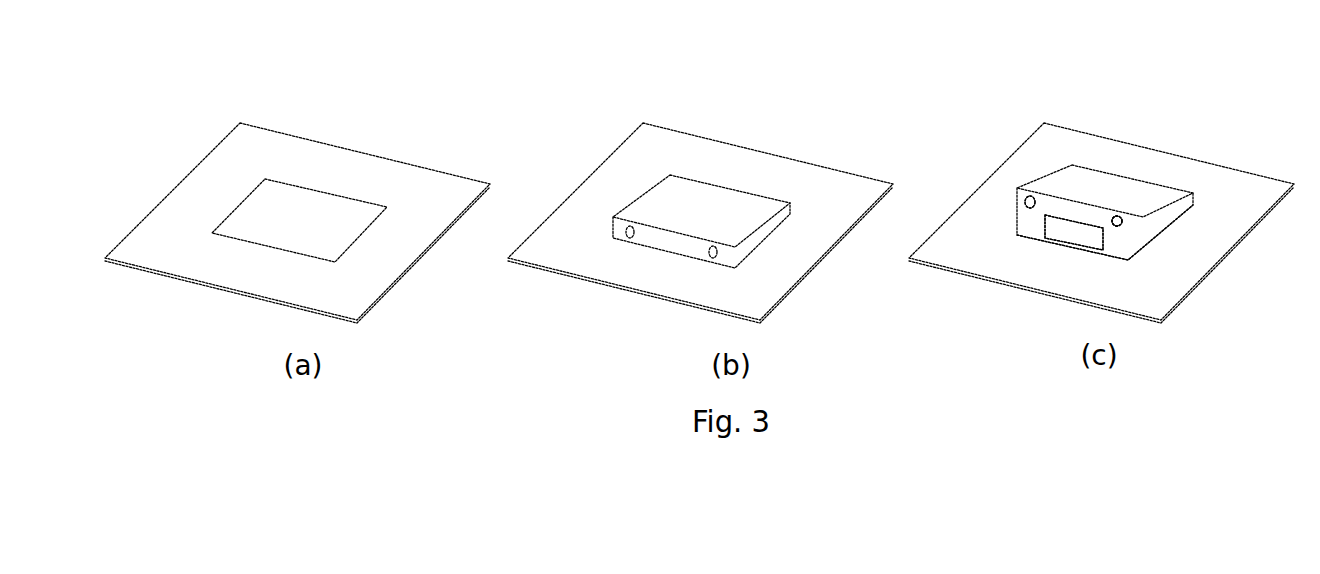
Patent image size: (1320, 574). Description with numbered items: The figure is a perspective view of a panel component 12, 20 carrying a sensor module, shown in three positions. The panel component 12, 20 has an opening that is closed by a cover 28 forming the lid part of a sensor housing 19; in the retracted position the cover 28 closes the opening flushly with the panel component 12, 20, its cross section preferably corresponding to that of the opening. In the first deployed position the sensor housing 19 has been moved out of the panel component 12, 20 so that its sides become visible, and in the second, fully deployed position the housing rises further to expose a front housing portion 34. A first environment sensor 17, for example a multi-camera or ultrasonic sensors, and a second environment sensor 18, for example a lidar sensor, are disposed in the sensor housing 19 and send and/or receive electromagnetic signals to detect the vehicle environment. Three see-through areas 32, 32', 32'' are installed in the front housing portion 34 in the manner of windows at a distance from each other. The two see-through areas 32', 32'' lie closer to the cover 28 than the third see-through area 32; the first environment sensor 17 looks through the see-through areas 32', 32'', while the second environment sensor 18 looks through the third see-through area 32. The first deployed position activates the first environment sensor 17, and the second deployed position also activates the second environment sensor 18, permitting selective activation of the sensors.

The panel component 12 is at (699, 185).
The panel component 20 is at (392, 180).
The cover 28 is at (273, 203).
The sensor housing 19 is at (743, 248).
The first environment sensor 17 is at (1030, 200).
The second environment sensor 18 is at (1055, 228).
The see-through area 32 is at (1054, 272).
The see-through area 32' is at (989, 143).
The see-through area 32'' is at (1179, 278).
The front housing portion 34 is at (1117, 240).